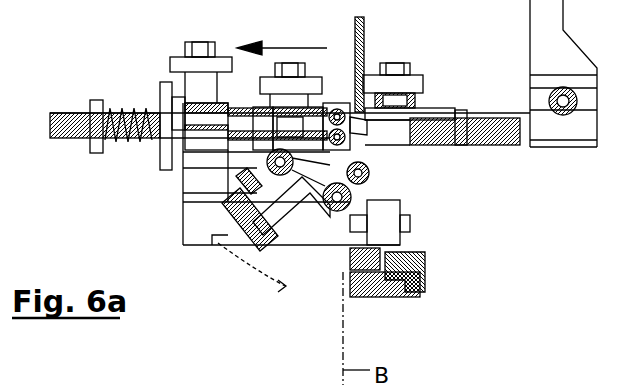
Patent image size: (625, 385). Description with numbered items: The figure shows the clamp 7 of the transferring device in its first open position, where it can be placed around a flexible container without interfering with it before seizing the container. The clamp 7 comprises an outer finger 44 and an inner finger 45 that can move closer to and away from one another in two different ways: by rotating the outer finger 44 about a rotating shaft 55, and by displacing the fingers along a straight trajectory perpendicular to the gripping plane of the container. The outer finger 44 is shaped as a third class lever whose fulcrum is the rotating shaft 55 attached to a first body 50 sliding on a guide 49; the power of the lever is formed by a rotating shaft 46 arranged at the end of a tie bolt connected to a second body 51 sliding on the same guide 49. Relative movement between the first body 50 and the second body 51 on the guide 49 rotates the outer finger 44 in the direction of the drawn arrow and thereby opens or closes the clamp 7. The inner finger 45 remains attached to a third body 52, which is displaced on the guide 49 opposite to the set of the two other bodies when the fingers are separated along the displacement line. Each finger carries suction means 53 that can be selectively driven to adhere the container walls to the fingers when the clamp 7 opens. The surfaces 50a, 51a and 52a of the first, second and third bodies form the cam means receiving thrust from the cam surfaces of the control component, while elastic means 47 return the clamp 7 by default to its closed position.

The clamp 7 is at (152, 100).
The outer finger 44 is at (253, 252).
The inner finger 45 is at (351, 293).
The rotating shaft 46 is at (368, 175).
The elastic means 47 is at (130, 143).
The guide 49 is at (437, 110).
The first body 50 is at (263, 174).
The surface of first body 50a is at (286, 54).
The second body 51 is at (405, 74).
The surface of second body 51a is at (436, 61).
The third body 52 is at (180, 56).
The surface of third body 52a is at (170, 63).
The suction means 53 is at (240, 181).
The rotating shaft 55 is at (352, 199).